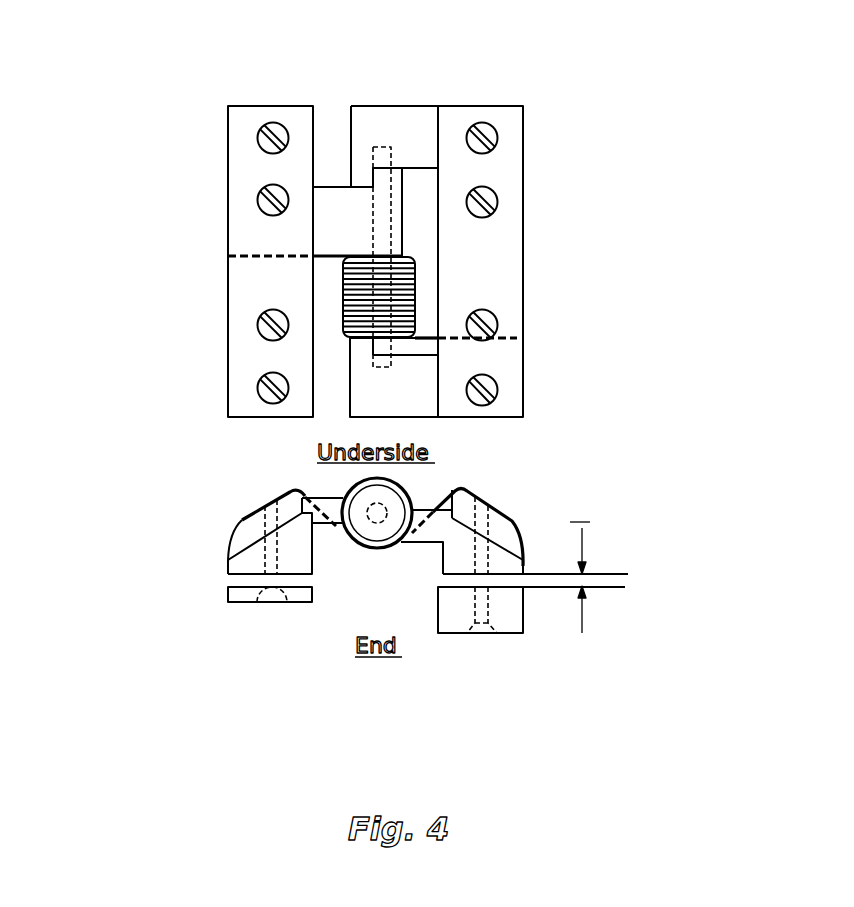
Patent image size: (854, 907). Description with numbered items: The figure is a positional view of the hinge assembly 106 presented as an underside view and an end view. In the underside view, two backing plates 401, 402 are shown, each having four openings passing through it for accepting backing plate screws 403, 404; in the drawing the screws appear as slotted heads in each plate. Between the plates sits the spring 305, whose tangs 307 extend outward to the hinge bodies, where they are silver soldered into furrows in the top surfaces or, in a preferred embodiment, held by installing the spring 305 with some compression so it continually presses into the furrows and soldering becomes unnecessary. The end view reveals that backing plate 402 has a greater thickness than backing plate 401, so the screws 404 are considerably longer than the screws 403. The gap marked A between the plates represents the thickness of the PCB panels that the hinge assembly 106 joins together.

The hinge assembly 106 is at (597, 177).
The spring 305 is at (415, 293).
The tangs 307 is at (227, 255).
The backing plate 401 is at (227, 162).
The backing plate 402 is at (523, 287).
The backing plate screws 403 is at (257, 388).
The backing plate screws 404 is at (482, 123).